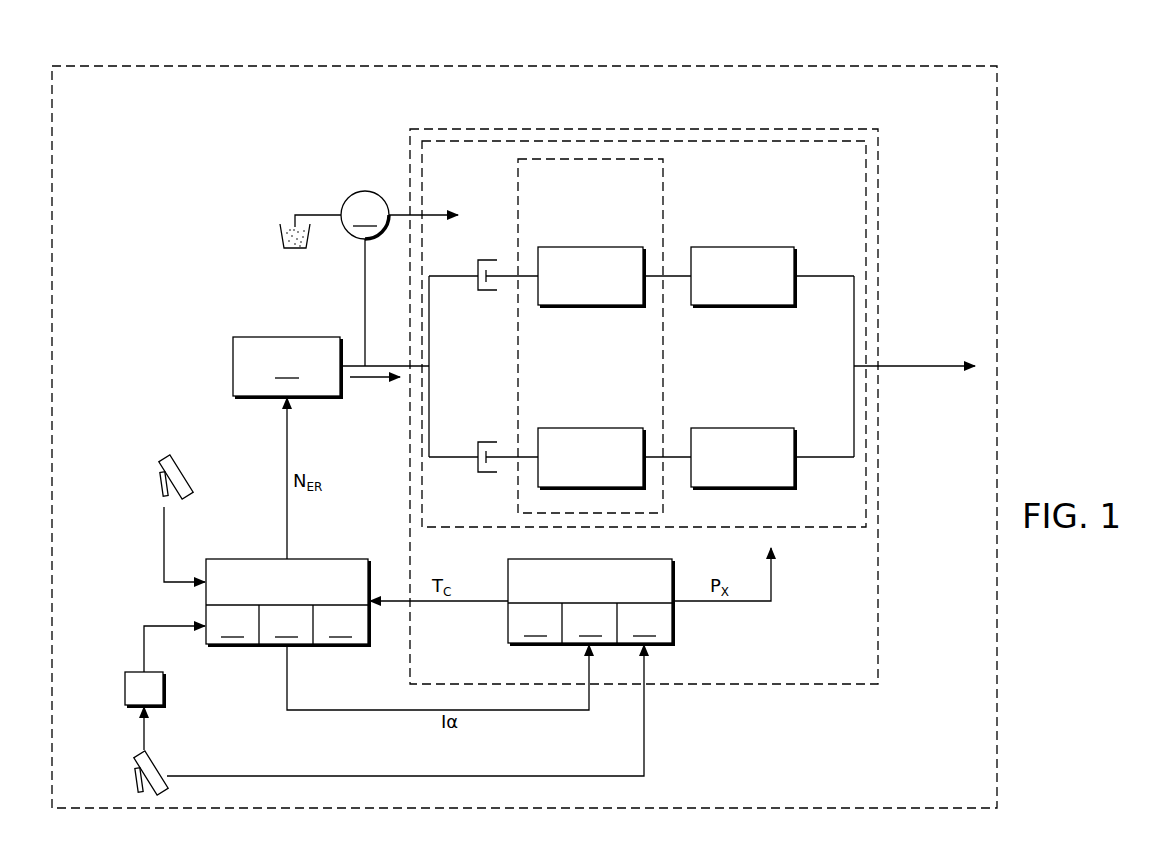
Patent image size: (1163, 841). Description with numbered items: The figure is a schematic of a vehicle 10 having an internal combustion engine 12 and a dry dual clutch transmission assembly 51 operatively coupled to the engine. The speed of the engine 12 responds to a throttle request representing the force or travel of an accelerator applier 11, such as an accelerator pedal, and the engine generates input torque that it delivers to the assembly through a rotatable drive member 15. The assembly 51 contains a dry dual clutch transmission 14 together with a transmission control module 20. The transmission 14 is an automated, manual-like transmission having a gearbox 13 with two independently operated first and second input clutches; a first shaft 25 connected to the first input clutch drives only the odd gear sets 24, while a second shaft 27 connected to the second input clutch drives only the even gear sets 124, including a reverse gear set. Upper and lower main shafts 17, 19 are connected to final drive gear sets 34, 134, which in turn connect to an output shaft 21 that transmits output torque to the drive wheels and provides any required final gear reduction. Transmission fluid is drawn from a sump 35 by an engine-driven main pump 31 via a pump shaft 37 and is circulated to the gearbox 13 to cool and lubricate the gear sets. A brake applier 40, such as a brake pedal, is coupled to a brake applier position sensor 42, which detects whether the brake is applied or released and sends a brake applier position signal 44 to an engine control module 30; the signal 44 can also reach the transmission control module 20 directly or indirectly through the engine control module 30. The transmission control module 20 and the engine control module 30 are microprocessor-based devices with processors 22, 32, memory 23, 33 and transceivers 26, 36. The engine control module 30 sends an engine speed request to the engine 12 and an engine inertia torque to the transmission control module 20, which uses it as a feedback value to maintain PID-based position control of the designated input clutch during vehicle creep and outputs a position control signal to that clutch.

The vehicle 10 is at (316, 58).
The accelerator applier 11 is at (156, 444).
The internal combustion engine 12 is at (287, 367).
The gearbox 13 is at (663, 222).
The dry dual clutch transmission (dDCT) 14 is at (866, 210).
The rotatable drive member 15 is at (404, 366).
The upper main shaft 17 is at (440, 276).
The lower main shaft 19 is at (437, 457).
The transmission control module (TCM) 20 is at (535, 643).
The output shaft 21 is at (907, 366).
The processor 22 is at (542, 623).
The memory 23 is at (597, 623).
The odd gear sets 24 is at (590, 247).
The first shaft 25 is at (508, 276).
The transceiver 26 is at (643, 625).
The second shaft 27 is at (508, 457).
The engine control module (ECM) 30 is at (260, 559).
The engine-driven main pump 31 is at (376, 215).
The processor 32 is at (239, 624).
The memory 33 is at (293, 624).
The final drive gear set 34 is at (745, 247).
The sump 35 is at (283, 232).
The transceiver 36 is at (339, 626).
The pump shaft 37 is at (365, 268).
The brake applier 40 is at (132, 775).
The brake applier position sensor (PS) 42 is at (125, 688).
The brake applier position signal 44 is at (144, 648).
The dry dual clutch transmission (dDCT) assembly 51 is at (452, 122).
The even gear sets 124 is at (590, 428).
The final drive gear set 134 is at (745, 428).